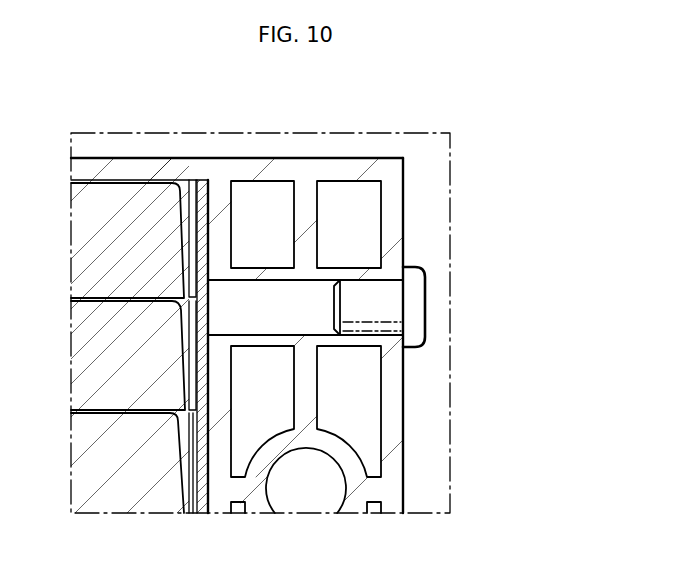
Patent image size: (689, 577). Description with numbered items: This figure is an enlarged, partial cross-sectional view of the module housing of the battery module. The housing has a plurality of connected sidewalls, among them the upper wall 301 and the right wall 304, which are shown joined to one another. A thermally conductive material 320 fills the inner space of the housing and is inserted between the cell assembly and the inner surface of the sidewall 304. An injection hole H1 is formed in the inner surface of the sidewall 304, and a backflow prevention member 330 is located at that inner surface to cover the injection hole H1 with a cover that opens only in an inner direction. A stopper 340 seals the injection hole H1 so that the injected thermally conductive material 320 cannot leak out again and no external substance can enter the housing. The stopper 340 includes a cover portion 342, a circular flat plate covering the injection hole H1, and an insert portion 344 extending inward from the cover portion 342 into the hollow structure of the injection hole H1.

The upper wall 301 is at (132, 168).
The thermally conductive material 320 is at (201, 203).
The backflow prevention member 330 is at (366, 148).
The stopper 340 is at (453, 281).
The cover portion 342 is at (456, 307).
The insert portion 344 is at (384, 280).
The right wall 304 is at (404, 412).
The injection hole H1 is at (263, 306).